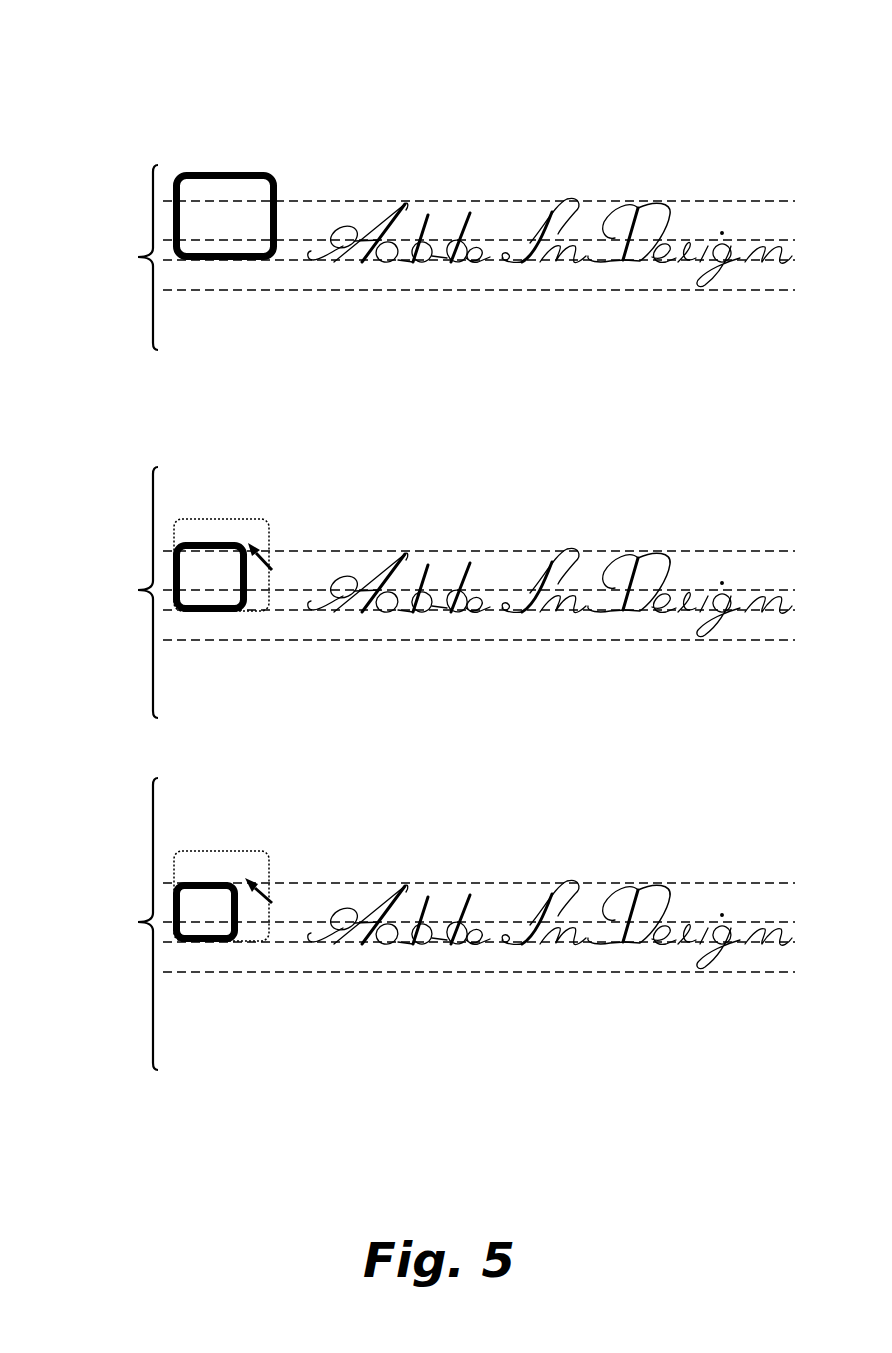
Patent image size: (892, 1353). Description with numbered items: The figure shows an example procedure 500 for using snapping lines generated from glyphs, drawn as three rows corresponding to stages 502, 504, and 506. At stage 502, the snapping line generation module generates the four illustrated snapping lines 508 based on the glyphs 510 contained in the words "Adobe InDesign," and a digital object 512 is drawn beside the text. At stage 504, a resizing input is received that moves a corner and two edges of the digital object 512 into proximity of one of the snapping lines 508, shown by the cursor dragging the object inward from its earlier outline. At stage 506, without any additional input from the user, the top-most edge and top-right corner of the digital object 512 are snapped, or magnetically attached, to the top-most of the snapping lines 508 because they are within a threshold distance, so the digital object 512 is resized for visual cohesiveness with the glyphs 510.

The example procedure 500 is at (168, 34).
The stage 502 is at (108, 266).
The stage 504 is at (108, 599).
The stage 506 is at (108, 932).
The snapping lines 508 is at (390, 200).
The glyphs 510 is at (558, 202).
The digital object 512 is at (273, 172).